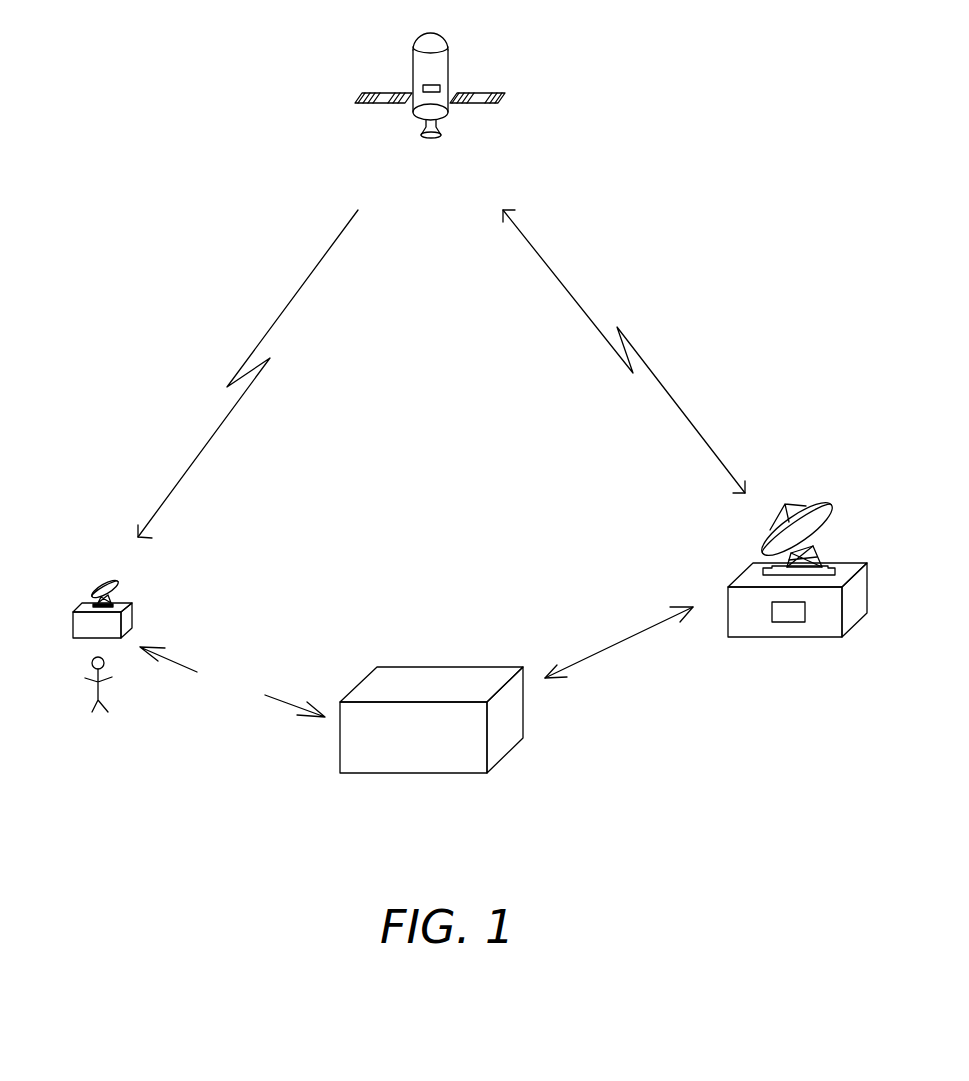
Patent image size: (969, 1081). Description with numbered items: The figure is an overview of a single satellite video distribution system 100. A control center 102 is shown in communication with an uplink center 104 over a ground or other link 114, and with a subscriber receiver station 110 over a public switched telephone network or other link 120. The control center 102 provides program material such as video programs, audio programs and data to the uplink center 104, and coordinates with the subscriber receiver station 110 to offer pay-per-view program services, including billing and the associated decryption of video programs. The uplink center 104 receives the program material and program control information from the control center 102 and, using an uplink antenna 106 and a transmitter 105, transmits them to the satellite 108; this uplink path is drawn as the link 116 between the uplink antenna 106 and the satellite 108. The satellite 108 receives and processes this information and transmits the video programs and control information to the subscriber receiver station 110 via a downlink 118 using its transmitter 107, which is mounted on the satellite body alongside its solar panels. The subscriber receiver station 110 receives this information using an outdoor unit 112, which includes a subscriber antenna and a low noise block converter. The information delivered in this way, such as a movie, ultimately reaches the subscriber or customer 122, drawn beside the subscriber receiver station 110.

The video distribution system 100 is at (698, 193).
The control center 102 is at (505, 755).
The uplink center 104 is at (780, 637).
The transmitter 105 is at (797, 622).
The uplink antenna 106 is at (833, 512).
The transmitter 107 is at (434, 84).
The satellite 108 is at (473, 103).
The subscriber receiver station 110 is at (142, 608).
The outdoor unit (ODU) 112 is at (100, 573).
The ground or other link 114 is at (612, 643).
The satellite link to ground station 116 is at (667, 390).
The downlink 118 is at (295, 297).
The public switched telephone network (PSTN) or other link 120 is at (263, 652).
The subscriber/customer 122 is at (118, 699).